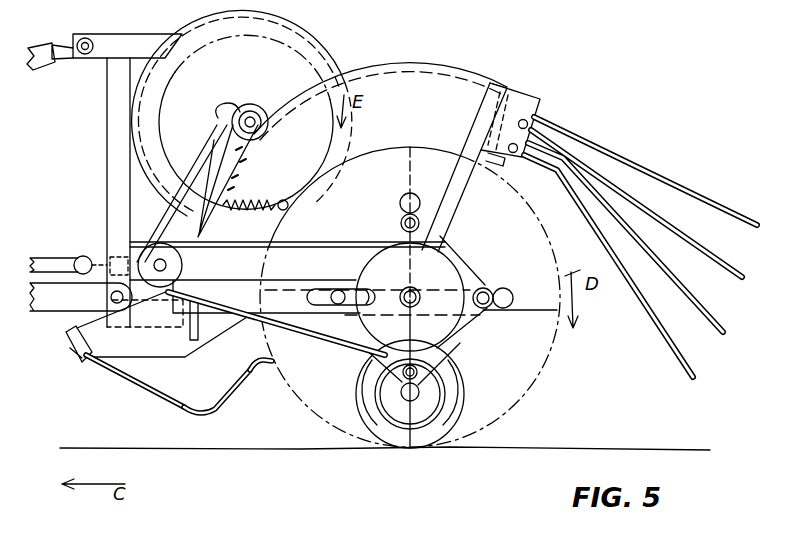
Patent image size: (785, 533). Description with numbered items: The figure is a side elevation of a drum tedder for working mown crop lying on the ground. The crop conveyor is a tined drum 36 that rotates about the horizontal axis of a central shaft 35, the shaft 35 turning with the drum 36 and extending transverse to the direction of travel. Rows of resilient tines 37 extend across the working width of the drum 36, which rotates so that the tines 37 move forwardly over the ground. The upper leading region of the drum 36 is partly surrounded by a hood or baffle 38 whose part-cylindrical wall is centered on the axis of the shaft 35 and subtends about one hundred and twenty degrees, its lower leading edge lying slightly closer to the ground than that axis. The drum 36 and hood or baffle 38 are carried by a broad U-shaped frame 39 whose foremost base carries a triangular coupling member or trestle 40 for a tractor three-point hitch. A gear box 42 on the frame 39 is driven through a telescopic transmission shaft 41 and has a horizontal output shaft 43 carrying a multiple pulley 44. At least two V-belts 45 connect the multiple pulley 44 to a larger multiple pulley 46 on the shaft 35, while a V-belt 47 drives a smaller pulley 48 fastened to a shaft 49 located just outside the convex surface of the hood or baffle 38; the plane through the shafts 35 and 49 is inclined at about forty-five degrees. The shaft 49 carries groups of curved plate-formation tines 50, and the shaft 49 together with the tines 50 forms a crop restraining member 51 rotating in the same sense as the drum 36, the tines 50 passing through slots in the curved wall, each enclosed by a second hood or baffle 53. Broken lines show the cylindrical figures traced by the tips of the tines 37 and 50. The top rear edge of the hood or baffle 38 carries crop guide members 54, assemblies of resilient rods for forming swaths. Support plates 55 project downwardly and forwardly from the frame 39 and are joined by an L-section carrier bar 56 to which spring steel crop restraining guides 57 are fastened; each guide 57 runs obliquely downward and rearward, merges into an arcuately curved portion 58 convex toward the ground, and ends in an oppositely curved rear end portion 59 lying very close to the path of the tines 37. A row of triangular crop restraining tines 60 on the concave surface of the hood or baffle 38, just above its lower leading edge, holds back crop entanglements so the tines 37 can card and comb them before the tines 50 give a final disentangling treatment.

The central shaft 35 is at (412, 305).
The tined drum 36 is at (493, 270).
The resilient tines 37 is at (510, 311).
The hood or baffle 38 is at (426, 73).
The frame 39 is at (308, 280).
The coupling member or trestle 40 is at (107, 160).
The telescopic transmission shaft 41 is at (50, 258).
The gear box 42 is at (160, 265).
The output shaft 43 is at (140, 258).
The multiple pulley 44 is at (157, 288).
The V-belts 45 is at (366, 237).
The larger multiple pulley 46 is at (452, 338).
The V-belt 47 is at (170, 210).
The smaller pulley 48 is at (251, 104).
The shaft 49 is at (256, 114).
The tines 50 is at (196, 112).
The crop restraining member 51 is at (303, 47).
The second hood or baffle 53 is at (188, 33).
The crop guide members 54 is at (642, 170).
The support plates 55 is at (174, 357).
The carrier bar 56 is at (74, 331).
The crop restraining guides 57 is at (126, 398).
The arcuately curved portion 58 is at (200, 420).
The rear end portion 59 is at (262, 372).
The crop restraining tines 60 is at (220, 274).